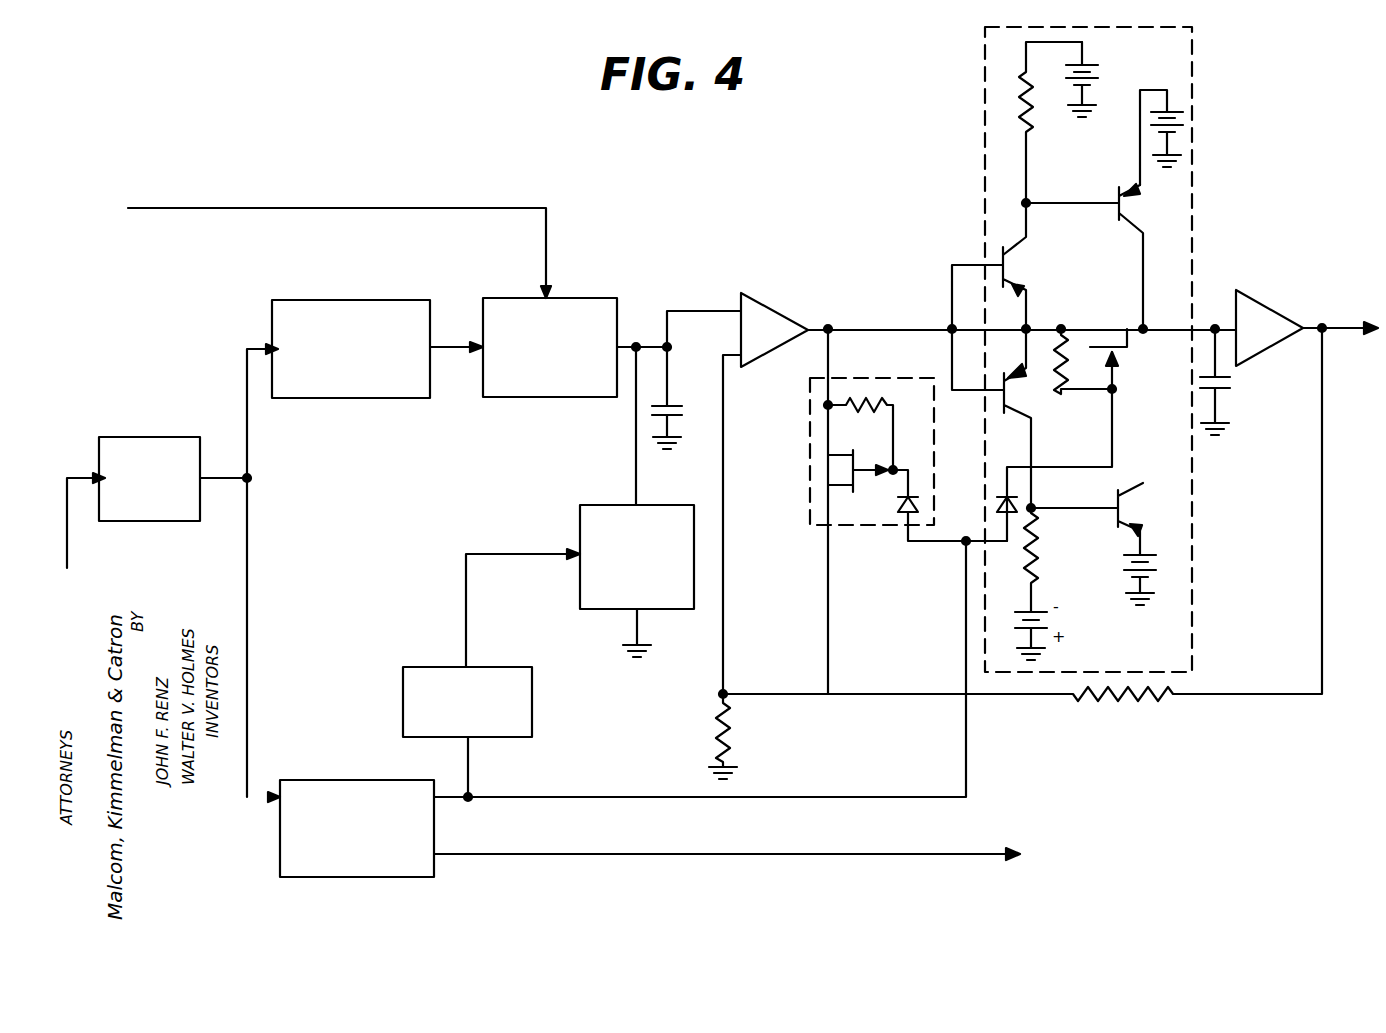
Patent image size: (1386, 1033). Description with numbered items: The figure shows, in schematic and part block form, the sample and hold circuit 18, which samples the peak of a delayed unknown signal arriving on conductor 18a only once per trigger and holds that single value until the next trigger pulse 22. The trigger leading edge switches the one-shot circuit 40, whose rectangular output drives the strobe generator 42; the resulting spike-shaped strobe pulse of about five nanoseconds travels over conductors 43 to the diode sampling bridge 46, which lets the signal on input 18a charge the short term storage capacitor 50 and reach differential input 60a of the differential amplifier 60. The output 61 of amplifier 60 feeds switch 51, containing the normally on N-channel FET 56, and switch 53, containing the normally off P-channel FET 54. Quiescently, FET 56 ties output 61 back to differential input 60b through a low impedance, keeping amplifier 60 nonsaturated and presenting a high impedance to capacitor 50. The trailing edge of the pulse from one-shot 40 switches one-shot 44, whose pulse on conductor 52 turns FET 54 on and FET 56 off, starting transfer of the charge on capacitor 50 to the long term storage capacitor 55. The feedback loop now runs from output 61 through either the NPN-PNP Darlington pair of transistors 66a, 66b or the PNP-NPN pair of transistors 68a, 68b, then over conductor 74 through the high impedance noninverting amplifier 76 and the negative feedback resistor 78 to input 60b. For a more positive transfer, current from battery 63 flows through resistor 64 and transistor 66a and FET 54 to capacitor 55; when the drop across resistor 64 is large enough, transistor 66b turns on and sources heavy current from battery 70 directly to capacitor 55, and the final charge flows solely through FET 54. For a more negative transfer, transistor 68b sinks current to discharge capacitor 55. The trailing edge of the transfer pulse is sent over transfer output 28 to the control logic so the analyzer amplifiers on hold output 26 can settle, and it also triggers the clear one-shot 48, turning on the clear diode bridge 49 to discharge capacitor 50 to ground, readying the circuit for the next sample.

The sample and hold circuit 18 is at (630, 750).
The conductor 18a is at (206, 208).
The trigger pulse 22 is at (68, 538).
The hold output 26 is at (1348, 324).
The transfer output 28 is at (958, 830).
The one-shot circuit 40 is at (125, 437).
The strobe generator 42 is at (360, 398).
The conductors 43 is at (448, 347).
The one-shot 44 is at (341, 774).
The diode sampling bridge 46 is at (570, 398).
The clear one-shot 48 is at (532, 676).
The clear diode bridge 49 is at (682, 606).
The short term storage capacitor 50 is at (678, 406).
The switch 51 is at (810, 510).
The conductor 52 is at (916, 794).
The switch 53 is at (984, 96).
The P-channel field effect transistor 54 is at (1120, 350).
The long term storage capacitor 55 is at (1230, 390).
The N-channel field effect transistor 56 is at (850, 461).
The differential amplifier 60 is at (768, 308).
The differential input 60a is at (738, 304).
The differential input 60b is at (738, 355).
The output 61 is at (818, 320).
The battery 63 is at (1094, 72).
The resistor 64 is at (1026, 116).
The transistor 66a is at (1011, 262).
The transistor 66b is at (1118, 218).
The transistor 68a is at (1019, 400).
The transistor 68b is at (1116, 554).
The battery 70 is at (1175, 110).
The conductor 74 is at (1216, 326).
The high impedance noninverting amplifier 76 is at (1276, 312).
The negative feedback resistor 78 is at (1136, 698).